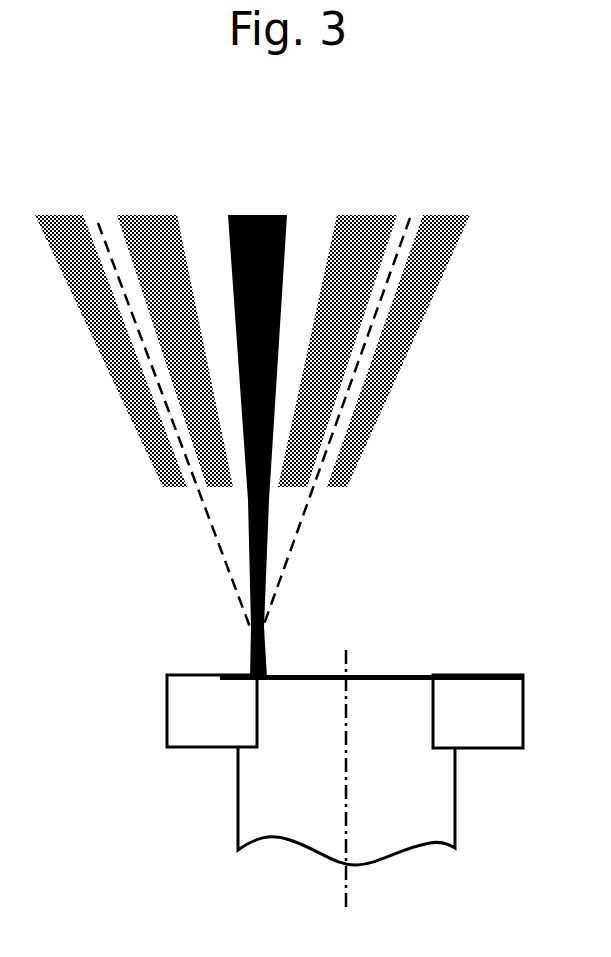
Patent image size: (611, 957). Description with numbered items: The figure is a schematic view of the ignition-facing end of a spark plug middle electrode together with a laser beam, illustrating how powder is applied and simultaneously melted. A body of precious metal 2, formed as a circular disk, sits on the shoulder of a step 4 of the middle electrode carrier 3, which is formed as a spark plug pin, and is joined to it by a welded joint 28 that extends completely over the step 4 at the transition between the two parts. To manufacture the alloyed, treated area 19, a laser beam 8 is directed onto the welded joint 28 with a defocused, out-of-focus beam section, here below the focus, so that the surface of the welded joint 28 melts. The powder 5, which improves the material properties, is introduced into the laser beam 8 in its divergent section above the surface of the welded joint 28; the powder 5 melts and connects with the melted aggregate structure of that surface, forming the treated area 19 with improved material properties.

The body of precious metal 2 is at (478, 702).
The middle electrode carrier 3 is at (380, 702).
The step 4 is at (418, 748).
The powder 5 is at (287, 422).
The laser beam 8 is at (352, 421).
The treated area 19 is at (277, 672).
The welded joint 28 is at (250, 673).